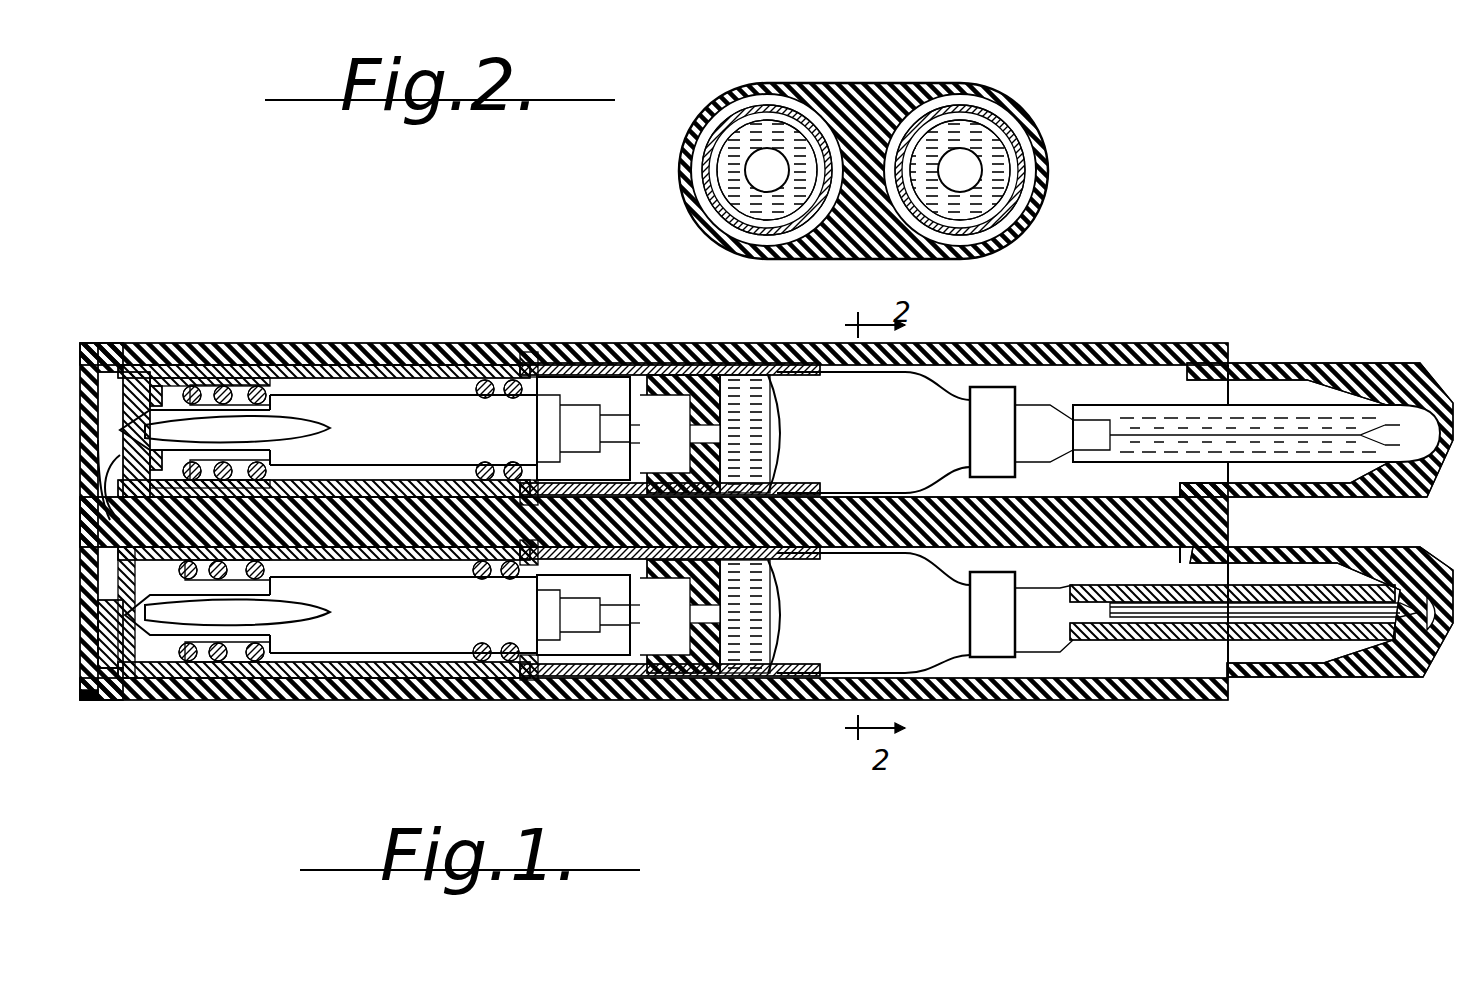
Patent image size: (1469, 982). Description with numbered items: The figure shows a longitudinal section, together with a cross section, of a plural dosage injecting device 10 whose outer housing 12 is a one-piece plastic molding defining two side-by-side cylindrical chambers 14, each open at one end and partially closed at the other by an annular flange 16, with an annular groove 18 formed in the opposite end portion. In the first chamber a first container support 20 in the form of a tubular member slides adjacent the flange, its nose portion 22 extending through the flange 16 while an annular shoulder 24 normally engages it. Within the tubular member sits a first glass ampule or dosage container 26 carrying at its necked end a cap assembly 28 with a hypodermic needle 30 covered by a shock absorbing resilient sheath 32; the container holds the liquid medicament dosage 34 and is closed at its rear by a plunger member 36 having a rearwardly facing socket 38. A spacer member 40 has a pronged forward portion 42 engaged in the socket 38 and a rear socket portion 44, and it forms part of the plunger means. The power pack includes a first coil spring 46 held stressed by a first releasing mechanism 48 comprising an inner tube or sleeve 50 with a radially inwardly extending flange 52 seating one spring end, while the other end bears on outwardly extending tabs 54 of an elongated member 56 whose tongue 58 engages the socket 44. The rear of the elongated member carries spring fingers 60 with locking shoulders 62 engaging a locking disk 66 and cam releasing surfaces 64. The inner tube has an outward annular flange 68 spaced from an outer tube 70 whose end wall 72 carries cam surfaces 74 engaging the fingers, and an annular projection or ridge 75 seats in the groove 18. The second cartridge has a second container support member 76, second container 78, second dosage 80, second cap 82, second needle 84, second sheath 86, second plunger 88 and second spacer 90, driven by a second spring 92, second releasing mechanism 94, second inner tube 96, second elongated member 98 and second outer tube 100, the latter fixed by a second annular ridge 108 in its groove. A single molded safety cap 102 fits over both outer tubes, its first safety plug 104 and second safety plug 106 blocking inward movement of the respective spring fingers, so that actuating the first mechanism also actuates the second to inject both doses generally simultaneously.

In FIG. 1, the plural dosage injecting device 10 is at (1120, 333).
In FIG. 2, the plural dosage injecting device 10 is at (1022, 78).
In FIG. 1, the outer housing 12 is at (1040, 700).
In FIG. 2, the outer housing 12 is at (912, 82).
In FIG. 1, the cylindrical chambers 14 is at (1105, 372).
In FIG. 1, the annular flange 16 is at (1202, 345).
In FIG. 1, the annular groove 18 is at (262, 345).
In FIG. 1, the first container support 20 is at (740, 375).
In FIG. 2, the first container support 20 is at (740, 240).
In FIG. 1, the nose portion 22 is at (1348, 362).
In FIG. 1, the annular shoulder 24 is at (1232, 512).
In FIG. 1, the first glass ampule or dosage container 26 is at (628, 365).
In FIG. 2, the first glass ampule or dosage container 26 is at (705, 115).
In FIG. 1, the cap assembly 28 is at (990, 390).
In FIG. 2, the cap assembly 28 is at (745, 167).
In FIG. 1, the hypodermic needle 30 is at (1380, 368).
In FIG. 1, the shock absorbing resilient sheath 32 is at (1257, 408).
In FIG. 1, the liquid medicament dosage 34 is at (785, 372).
In FIG. 2, the liquid medicament dosage 34 is at (735, 188).
In FIG. 1, the plunger member 36 is at (705, 365).
In FIG. 1, the socket 38 is at (800, 432).
In FIG. 1, the spacer member 40 is at (528, 358).
In FIG. 1, the pronged forward portion 42 is at (785, 432).
In FIG. 1, the socket portion 44 is at (545, 400).
In FIG. 1, the first coil spring 46 is at (262, 370).
In FIG. 1, the first releasing mechanism 48 is at (400, 345).
In FIG. 1, the inner tube or sleeve 50 is at (488, 378).
In FIG. 1, the radially inwardly extending flange 52 is at (260, 410).
In FIG. 1, the outwardly extending tabs 54 is at (530, 405).
In FIG. 1, the elongated member 56 is at (387, 378).
In FIG. 1, the tongue 58 is at (622, 408).
In FIG. 1, the spring fingers 60 is at (280, 445).
In FIG. 1, the locking shoulders 62 is at (237, 433).
In FIG. 1, the cam releasing surfaces 64 is at (145, 372).
In FIG. 1, the locking disk 66 is at (160, 385).
In FIG. 1, the annular flange 68 is at (518, 345).
In FIG. 1, the outer tube 70 is at (452, 345).
In FIG. 1, the end wall 72 is at (110, 343).
In FIG. 1, the cam surfaces 74 is at (105, 490).
In FIG. 1, the annular projection or ridge 75 is at (242, 345).
In FIG. 1, the second container support member 76 is at (1325, 680).
In FIG. 2, the second container support member 76 is at (1005, 240).
In FIG. 1, the second container 78 is at (905, 680).
In FIG. 2, the second container 78 is at (985, 162).
In FIG. 1, the second dosage 80 is at (748, 680).
In FIG. 2, the second dosage 80 is at (985, 200).
In FIG. 1, the second cap 82 is at (985, 612).
In FIG. 2, the second cap 82 is at (965, 172).
In FIG. 1, the second needle 84 is at (1312, 585).
In FIG. 1, the second sheath 86 is at (1383, 600).
In FIG. 1, the second plunger 88 is at (665, 676).
In FIG. 1, the second spacer 90 is at (565, 680).
In FIG. 1, the second spring 92 is at (488, 680).
In FIG. 1, the second releasing mechanism 94 is at (360, 700).
In FIG. 1, the second inner tube 96 is at (310, 700).
In FIG. 1, the second elongated member 98 is at (470, 628).
In FIG. 1, the second outer tube 100 is at (192, 695).
In FIG. 1, the safety cap 102 is at (95, 705).
In FIG. 1, the first safety plug 104 is at (330, 420).
In FIG. 1, the second safety plug 106 is at (250, 613).
In FIG. 1, the second annular ridge 108 is at (255, 698).